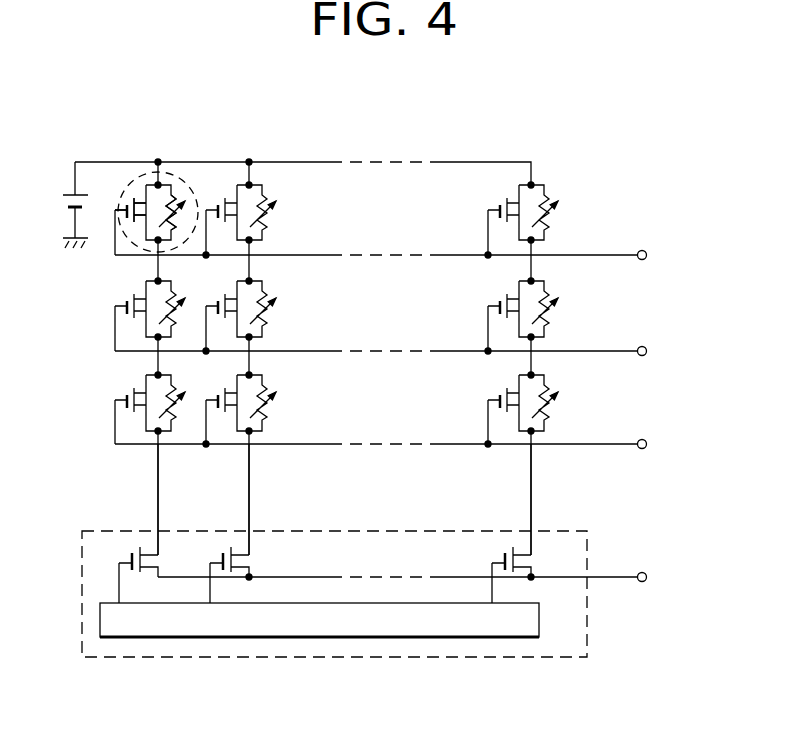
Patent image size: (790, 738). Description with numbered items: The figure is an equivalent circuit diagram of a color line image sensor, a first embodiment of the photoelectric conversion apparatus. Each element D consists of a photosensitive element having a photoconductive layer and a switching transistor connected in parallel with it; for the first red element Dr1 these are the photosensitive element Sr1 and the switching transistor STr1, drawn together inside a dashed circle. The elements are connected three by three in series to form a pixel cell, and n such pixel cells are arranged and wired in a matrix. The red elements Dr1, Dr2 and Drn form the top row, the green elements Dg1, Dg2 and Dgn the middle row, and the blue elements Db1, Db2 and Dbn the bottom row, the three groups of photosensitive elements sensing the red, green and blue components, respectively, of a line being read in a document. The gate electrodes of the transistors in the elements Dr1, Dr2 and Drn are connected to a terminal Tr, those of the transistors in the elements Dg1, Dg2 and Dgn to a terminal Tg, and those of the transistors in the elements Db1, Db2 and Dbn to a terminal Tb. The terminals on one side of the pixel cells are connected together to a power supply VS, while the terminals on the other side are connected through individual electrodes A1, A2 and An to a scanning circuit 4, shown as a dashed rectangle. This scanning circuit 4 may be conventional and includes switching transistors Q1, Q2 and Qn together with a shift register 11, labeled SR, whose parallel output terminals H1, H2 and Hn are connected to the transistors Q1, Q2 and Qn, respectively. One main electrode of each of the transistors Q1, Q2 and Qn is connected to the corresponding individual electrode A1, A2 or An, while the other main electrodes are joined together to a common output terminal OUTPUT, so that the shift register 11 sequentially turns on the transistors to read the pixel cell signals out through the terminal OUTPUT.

The scanning circuit 4 is at (409, 616).
The shift register 11 is at (319, 652).
The element Dr1 is at (133, 182).
The element Dr2 is at (255, 215).
The element Drn is at (537, 214).
The element Dg1 is at (159, 310).
The element Dg2 is at (254, 310).
The element Dgn is at (536, 309).
The element Db1 is at (159, 403).
The element Db2 is at (254, 403).
The element Dbn is at (536, 402).
The photosensitive element Sr1 is at (176, 192).
The switching transistor STr1 is at (133, 228).
The power supply VS is at (64, 205).
The terminal Tr is at (394, 255).
The terminal Tg is at (396, 351).
The terminal Tb is at (396, 444).
The individual electrode A1 is at (170, 499).
The individual electrode A2 is at (262, 499).
The individual electrode An is at (545, 499).
The switching transistor Q1 is at (130, 558).
The switching transistor Q2 is at (222, 558).
The switching transistor Qn is at (504, 558).
The parallel output terminal H1 is at (132, 583).
The parallel output terminal H2 is at (223, 583).
The parallel output terminal Hn is at (506, 583).
The shift register SR is at (319, 620).
The output terminal OUTPUT is at (447, 577).